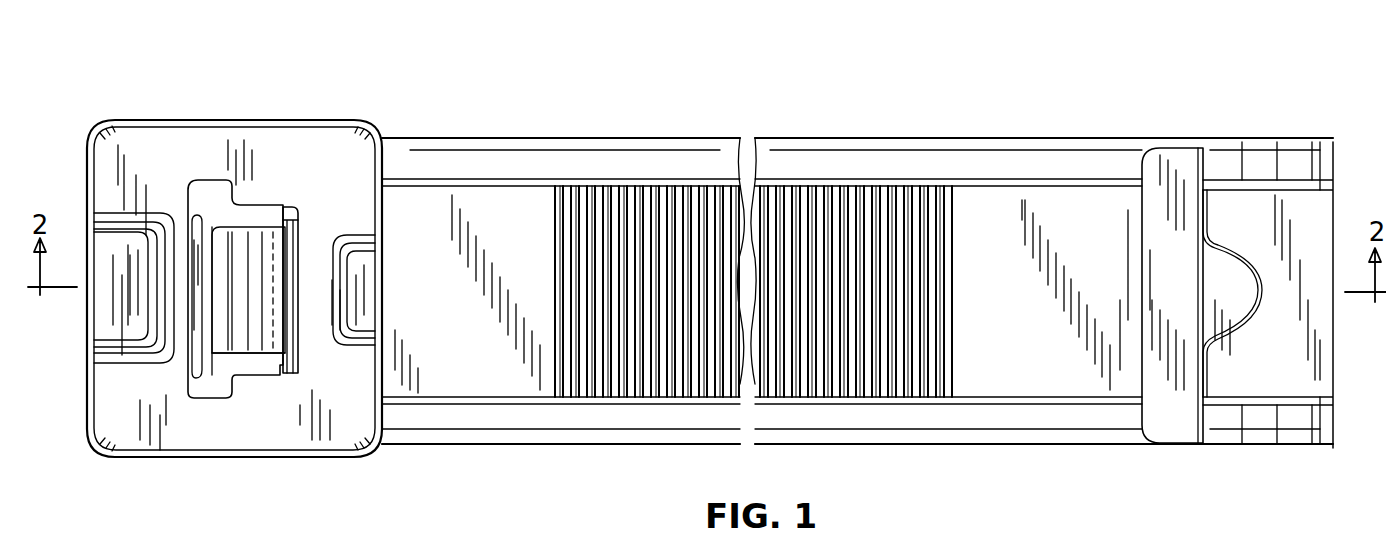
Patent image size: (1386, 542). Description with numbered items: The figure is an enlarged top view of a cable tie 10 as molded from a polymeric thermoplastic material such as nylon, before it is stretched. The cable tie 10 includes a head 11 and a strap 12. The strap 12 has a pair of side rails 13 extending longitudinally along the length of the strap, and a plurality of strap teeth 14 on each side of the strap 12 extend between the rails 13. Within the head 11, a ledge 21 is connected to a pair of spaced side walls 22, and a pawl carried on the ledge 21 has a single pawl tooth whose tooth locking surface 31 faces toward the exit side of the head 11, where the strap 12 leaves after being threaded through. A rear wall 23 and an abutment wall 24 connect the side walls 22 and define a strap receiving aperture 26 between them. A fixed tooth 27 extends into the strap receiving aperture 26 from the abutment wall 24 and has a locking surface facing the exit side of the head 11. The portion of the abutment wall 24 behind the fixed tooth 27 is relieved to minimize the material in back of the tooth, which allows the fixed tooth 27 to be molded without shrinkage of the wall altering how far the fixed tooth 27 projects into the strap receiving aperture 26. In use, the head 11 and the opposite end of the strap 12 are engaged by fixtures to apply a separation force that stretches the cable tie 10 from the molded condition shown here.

The cable tie 10 is at (553, 122).
The head 11 is at (238, 115).
The strap 12 is at (818, 135).
The side rails 13 is at (986, 160).
The strap teeth 14 is at (948, 293).
The ledge 21 is at (285, 366).
The side walls 22 is at (308, 150).
The rear wall 23 is at (370, 444).
The abutment wall 24 is at (182, 327).
The strap receiving aperture 26 is at (211, 190).
The fixed tooth 27 is at (203, 347).
The tooth locking surface 31 is at (220, 330).